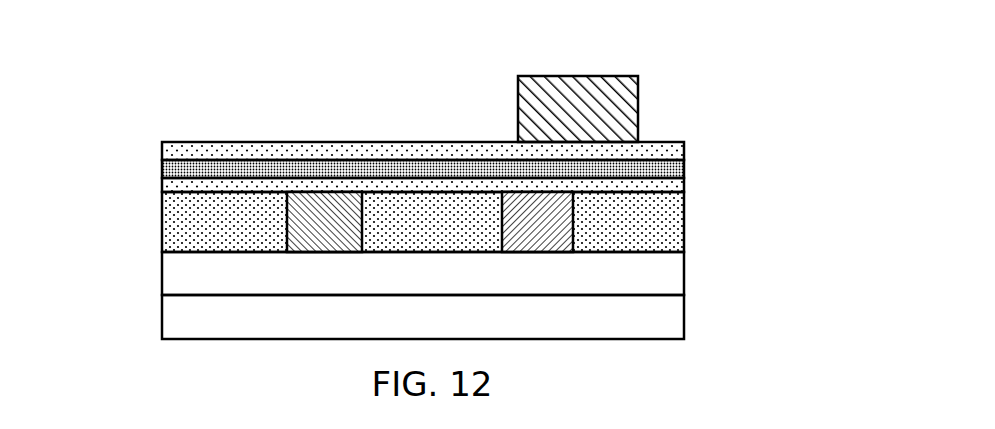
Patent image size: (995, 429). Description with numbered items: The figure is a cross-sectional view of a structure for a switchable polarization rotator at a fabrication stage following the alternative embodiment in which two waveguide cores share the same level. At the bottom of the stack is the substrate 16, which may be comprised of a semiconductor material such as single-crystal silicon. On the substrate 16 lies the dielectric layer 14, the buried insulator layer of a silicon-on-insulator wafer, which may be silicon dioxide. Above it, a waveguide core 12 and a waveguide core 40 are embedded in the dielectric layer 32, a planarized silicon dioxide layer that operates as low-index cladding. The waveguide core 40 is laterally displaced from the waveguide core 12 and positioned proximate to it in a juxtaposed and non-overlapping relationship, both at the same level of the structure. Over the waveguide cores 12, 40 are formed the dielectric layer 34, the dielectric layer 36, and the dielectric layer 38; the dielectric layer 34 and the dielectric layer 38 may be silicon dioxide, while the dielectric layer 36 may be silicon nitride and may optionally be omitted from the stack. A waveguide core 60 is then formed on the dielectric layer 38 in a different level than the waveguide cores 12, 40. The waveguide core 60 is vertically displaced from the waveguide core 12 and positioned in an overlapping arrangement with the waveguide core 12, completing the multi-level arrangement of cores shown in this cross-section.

The waveguide core 12 is at (552, 225).
The dielectric layer 14 is at (187, 273).
The substrate 16 is at (650, 323).
The dielectric layer 32 is at (185, 241).
The dielectric layer 34 is at (664, 185).
The dielectric layer 36 is at (215, 169).
The dielectric layer 38 is at (662, 153).
The waveguide core 40 is at (310, 218).
The waveguide core 60 is at (553, 105).